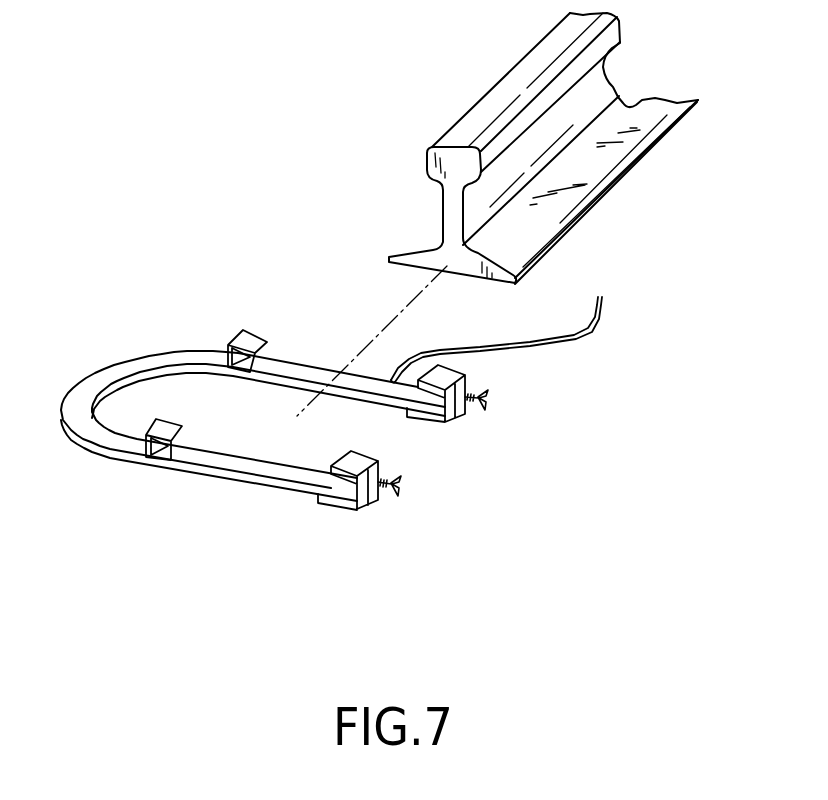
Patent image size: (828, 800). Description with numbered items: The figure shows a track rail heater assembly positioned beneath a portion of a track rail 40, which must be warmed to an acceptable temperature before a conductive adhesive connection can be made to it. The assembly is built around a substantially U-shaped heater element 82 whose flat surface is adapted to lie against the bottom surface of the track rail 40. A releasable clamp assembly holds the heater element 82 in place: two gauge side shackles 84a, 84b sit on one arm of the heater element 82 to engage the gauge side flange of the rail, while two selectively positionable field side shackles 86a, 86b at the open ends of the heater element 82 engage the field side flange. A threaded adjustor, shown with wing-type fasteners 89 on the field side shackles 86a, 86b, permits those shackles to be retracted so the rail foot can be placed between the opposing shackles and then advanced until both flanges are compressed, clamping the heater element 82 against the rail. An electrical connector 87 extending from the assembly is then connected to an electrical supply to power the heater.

The track rail 40 is at (460, 157).
The U-shaped heater element 82 is at (102, 372).
The gauge side shackle 84a is at (258, 338).
The gauge side shackle 84b is at (162, 435).
The field side shackle 86a is at (445, 372).
The field side shackle 86b is at (358, 453).
The electrical connector 87 is at (506, 326).
The wing screw 89 is at (474, 403).